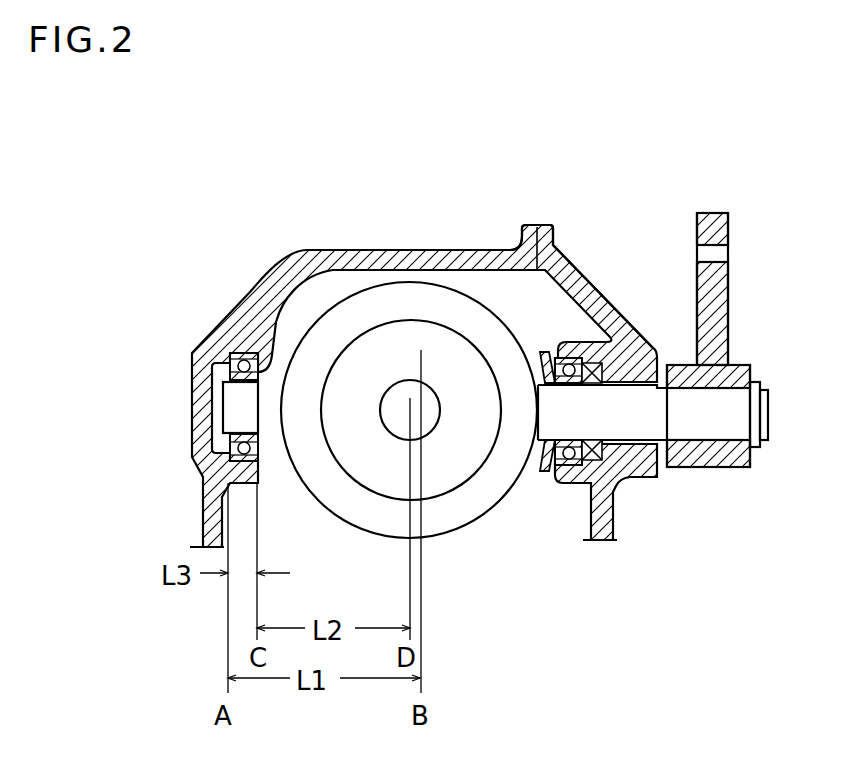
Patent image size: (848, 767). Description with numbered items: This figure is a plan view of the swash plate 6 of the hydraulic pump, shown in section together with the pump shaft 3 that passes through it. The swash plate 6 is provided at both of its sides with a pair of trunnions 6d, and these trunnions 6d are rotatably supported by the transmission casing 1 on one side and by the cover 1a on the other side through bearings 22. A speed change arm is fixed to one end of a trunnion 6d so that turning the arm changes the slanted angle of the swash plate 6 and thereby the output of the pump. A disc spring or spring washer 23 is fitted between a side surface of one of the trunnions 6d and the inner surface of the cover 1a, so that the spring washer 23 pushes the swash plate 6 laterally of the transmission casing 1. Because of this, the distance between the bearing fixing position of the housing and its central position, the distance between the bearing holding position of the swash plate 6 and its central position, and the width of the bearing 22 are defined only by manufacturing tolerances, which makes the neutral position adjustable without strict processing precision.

The transmission casing 1 is at (307, 250).
The cover 1a is at (567, 260).
The pump shaft 3 is at (433, 422).
The swash plate 6 is at (457, 532).
The trunnions 6d is at (236, 404).
The bearings 22 is at (241, 352).
The spring washer 23 is at (547, 473).